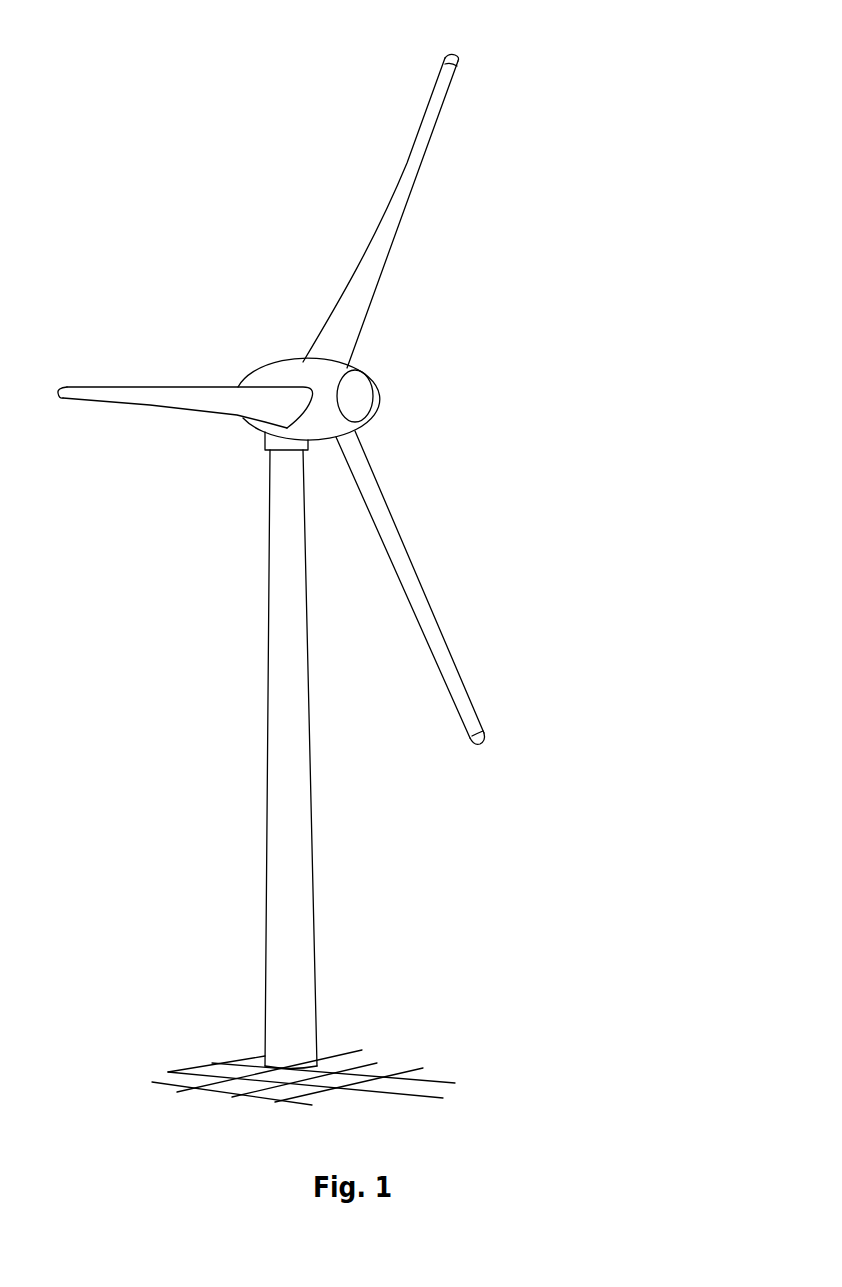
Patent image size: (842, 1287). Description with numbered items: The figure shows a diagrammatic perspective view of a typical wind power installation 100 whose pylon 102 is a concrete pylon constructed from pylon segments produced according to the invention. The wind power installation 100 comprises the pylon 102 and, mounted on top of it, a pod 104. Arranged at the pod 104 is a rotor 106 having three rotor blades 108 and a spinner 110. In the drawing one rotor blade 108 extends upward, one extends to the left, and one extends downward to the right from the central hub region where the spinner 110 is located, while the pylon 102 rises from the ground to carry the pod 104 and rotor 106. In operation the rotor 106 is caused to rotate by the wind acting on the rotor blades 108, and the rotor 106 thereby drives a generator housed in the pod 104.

The wind power installation 100 is at (228, 505).
The pylon 102 is at (295, 852).
The pod 104 is at (282, 373).
The rotor 106 is at (483, 290).
The rotor blades 108 is at (408, 173).
The spinner 110 is at (360, 393).